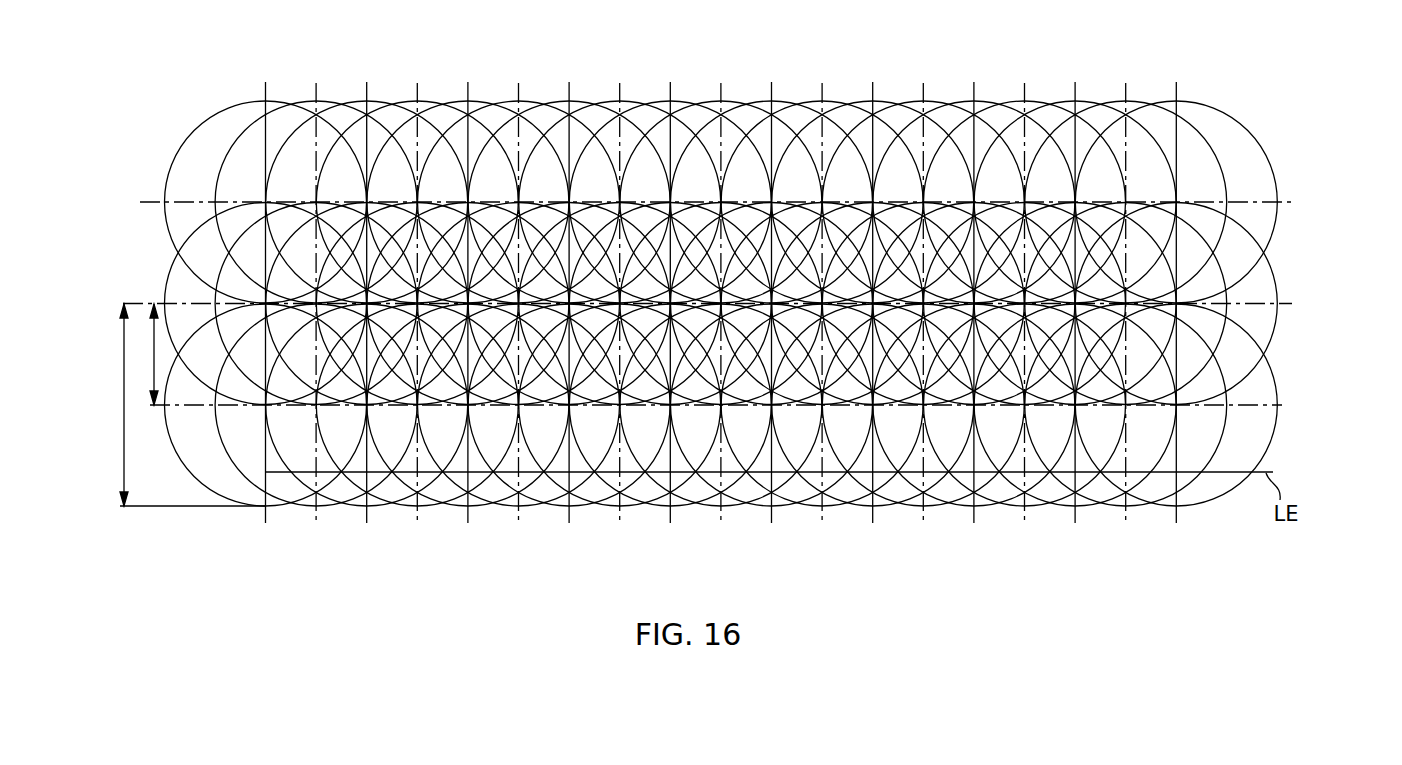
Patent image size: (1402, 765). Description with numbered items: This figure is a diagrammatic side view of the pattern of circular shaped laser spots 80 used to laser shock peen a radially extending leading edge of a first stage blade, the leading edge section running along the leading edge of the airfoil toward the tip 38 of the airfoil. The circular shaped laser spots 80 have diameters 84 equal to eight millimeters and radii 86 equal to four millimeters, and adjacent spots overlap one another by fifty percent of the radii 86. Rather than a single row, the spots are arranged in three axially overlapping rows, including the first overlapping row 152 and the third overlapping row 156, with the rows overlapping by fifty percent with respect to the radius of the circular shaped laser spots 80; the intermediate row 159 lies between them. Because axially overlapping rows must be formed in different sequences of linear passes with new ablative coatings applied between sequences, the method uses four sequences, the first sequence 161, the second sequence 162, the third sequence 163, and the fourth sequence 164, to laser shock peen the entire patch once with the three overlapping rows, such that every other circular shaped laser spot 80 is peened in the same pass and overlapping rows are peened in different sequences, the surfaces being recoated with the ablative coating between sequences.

The tip of the airfoil 38 is at (256, 80).
The circular shaped laser spots 80 is at (257, 508).
The diameters 84 is at (124, 405).
The radii 86 is at (153, 354).
The first overlapping row 152 is at (1280, 433).
The third overlapping row 156 is at (1279, 167).
The middle row of circles 159 is at (1279, 262).
The first sequence 161 is at (273, 102).
The second sequence 162 is at (321, 508).
The third sequence 163 is at (167, 277).
The fourth sequence 164 is at (253, 223).